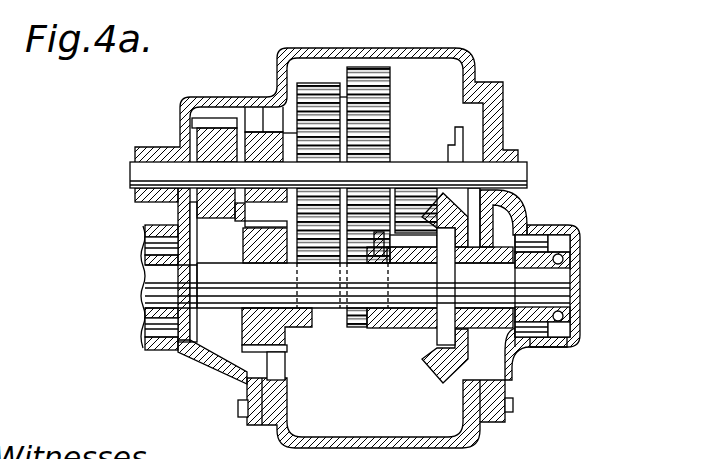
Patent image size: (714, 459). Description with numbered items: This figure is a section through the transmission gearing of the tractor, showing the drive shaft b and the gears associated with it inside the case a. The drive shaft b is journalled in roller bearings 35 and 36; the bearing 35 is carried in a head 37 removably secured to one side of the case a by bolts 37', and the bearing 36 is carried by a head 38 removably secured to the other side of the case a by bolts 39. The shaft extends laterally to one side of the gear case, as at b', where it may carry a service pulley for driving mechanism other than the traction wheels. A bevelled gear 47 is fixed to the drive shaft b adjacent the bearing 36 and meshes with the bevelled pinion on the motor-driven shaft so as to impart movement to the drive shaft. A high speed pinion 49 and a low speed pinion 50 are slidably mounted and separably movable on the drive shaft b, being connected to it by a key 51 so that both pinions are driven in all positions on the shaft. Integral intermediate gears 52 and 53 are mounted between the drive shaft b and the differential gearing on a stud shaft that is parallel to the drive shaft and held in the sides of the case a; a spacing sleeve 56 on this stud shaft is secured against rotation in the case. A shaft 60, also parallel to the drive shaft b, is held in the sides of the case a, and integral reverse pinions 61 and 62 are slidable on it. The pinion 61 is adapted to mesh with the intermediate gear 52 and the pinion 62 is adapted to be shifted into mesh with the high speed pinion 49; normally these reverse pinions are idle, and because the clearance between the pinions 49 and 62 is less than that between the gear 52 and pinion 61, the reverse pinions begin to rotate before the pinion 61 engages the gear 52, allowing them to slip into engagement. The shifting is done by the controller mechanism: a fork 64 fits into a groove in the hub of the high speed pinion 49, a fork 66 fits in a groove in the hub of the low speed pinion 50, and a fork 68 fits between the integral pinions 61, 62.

The case a is at (326, 195).
The drive shaft b is at (357, 319).
The laterally extending end of drive shaft b' is at (148, 287).
The roller bearing 35 is at (162, 330).
The roller bearing 36 is at (535, 330).
The head 37 is at (212, 370).
The bolts 37' is at (226, 421).
The head 38 is at (515, 223).
The bolts 39 is at (513, 405).
The bevelled gear 47 is at (442, 372).
The high speed pinion 49 is at (283, 345).
The low speed pinion 50 is at (405, 333).
The key 51 is at (437, 291).
The intermediate gear 52 is at (315, 90).
The intermediate gear 53 is at (370, 73).
The spacing sleeve 56 is at (418, 157).
The shaft 60 is at (510, 175).
The reverse pinion 61 is at (258, 138).
The reverse pinion 62 is at (208, 130).
The fork 64 is at (293, 258).
The fork 66 is at (377, 256).
The fork 68 is at (238, 222).